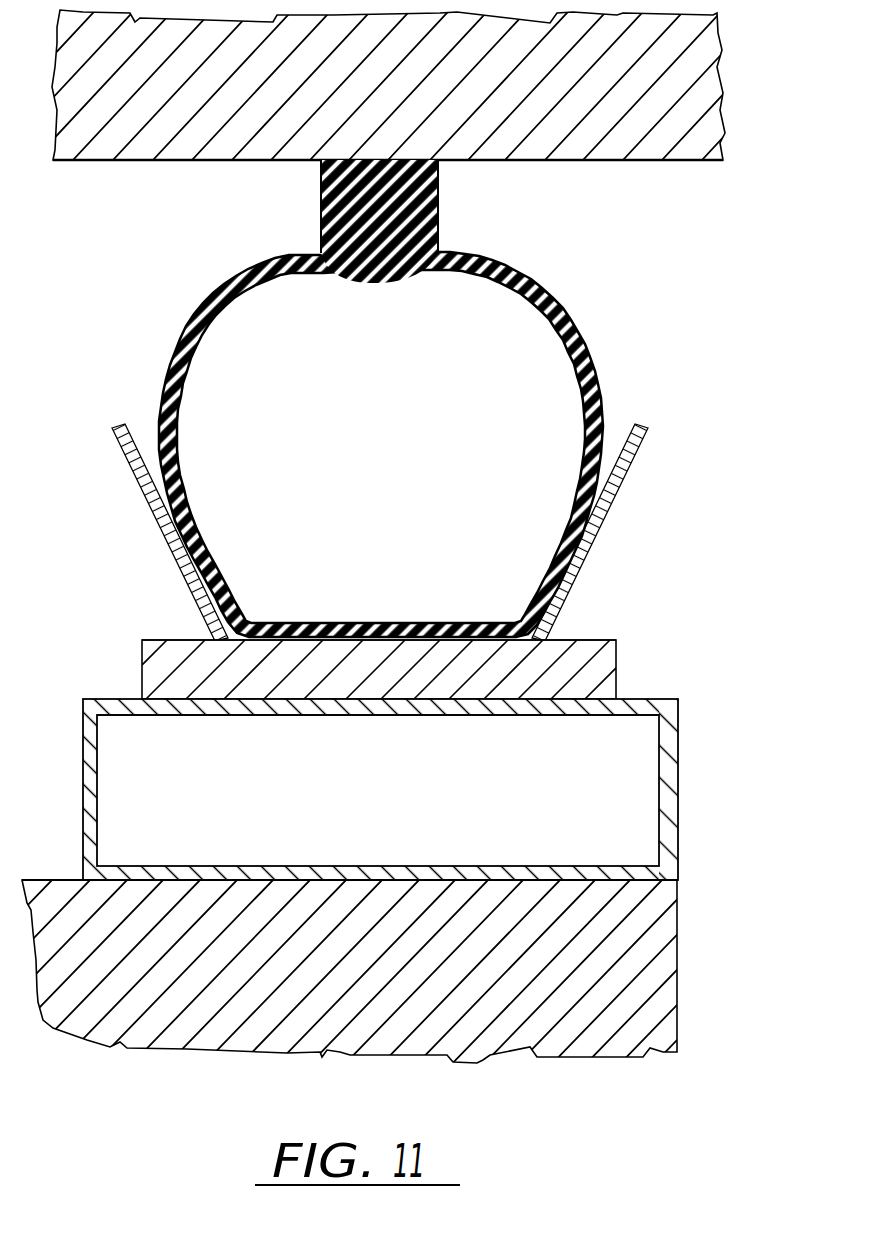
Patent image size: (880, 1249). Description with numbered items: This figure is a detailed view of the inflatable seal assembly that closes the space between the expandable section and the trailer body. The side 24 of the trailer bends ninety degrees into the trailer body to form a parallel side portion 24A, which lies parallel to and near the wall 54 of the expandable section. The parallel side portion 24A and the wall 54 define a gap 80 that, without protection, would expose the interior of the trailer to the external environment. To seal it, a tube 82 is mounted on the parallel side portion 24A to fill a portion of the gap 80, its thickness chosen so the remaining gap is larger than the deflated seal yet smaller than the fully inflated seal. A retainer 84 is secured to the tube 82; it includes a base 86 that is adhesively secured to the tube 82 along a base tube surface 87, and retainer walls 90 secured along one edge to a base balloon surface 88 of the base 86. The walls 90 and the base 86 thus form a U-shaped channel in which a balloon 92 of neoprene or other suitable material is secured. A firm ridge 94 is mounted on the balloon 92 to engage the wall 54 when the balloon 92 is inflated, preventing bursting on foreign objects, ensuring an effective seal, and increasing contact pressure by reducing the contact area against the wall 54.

The side 24 is at (416, 975).
The parallel side portion 24A is at (600, 881).
The wall 54 is at (690, 163).
The gap 80 is at (369, 400).
The tube 82 is at (421, 789).
The retainer 84 is at (417, 635).
The base 86 is at (596, 676).
The base tube surface 87 is at (374, 699).
The base balloon surface 88 is at (178, 640).
The retainer walls 90 is at (143, 497).
The balloon 92 is at (604, 376).
The firm ridge 94 is at (440, 218).